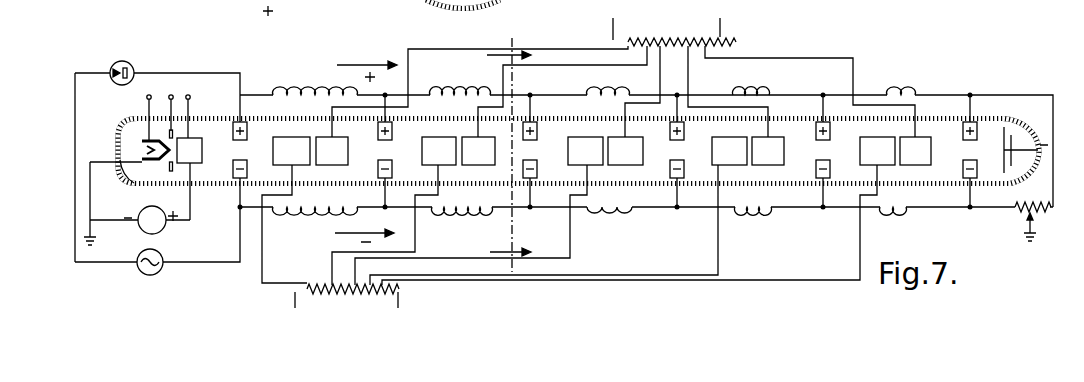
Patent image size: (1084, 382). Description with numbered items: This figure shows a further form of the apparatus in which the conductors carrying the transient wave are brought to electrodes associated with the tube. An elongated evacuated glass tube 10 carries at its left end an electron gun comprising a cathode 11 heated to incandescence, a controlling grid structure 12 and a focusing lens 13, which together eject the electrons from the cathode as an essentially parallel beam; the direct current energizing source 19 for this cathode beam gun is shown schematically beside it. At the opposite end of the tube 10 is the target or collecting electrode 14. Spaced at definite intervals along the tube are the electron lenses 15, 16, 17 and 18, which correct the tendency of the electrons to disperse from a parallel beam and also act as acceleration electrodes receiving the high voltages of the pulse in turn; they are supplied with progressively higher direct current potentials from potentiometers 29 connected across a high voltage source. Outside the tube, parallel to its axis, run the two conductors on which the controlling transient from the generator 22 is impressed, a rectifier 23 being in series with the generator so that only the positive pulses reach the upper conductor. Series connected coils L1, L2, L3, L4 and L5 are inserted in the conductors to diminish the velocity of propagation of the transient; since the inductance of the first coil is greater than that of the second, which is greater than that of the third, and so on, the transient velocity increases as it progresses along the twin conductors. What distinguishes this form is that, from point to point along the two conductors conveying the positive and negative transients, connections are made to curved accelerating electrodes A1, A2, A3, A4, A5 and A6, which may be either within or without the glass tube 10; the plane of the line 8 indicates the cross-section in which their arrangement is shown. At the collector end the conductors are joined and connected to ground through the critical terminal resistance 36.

The section plane line 8 is at (509, 155).
The evacuated tube 10 is at (467, 9).
The cathode 11 is at (117, 136).
The controlling grid structure 12 is at (126, 180).
The focusing lens 13 is at (172, 172).
The target or collecting electrode 14 is at (1011, 173).
The electron lens 15 is at (302, 165).
The electron lens 16 is at (446, 165).
The electron lens 17 is at (595, 165).
The electron lens 18 is at (738, 165).
The direct current energizing source 19 is at (167, 226).
The generator 22 is at (164, 266).
The rectifier 23 is at (133, 64).
The potentiometer 29 is at (715, 40).
The critical terminal resistance 36 is at (1041, 215).
The series connected coil L1 is at (308, 88).
The series connected coil L2 is at (460, 90).
The series connected coil L3 is at (606, 89).
The series connected coil L4 is at (750, 89).
The series connected coil L5 is at (894, 91).
The curved accelerating electrode A1 is at (233, 169).
The curved accelerating electrode A2 is at (378, 169).
The curved accelerating electrode A3 is at (548, 141).
The curved accelerating electrode A4 is at (670, 169).
The curved accelerating electrode A5 is at (816, 169).
The curved accelerating electrode A6 is at (963, 169).